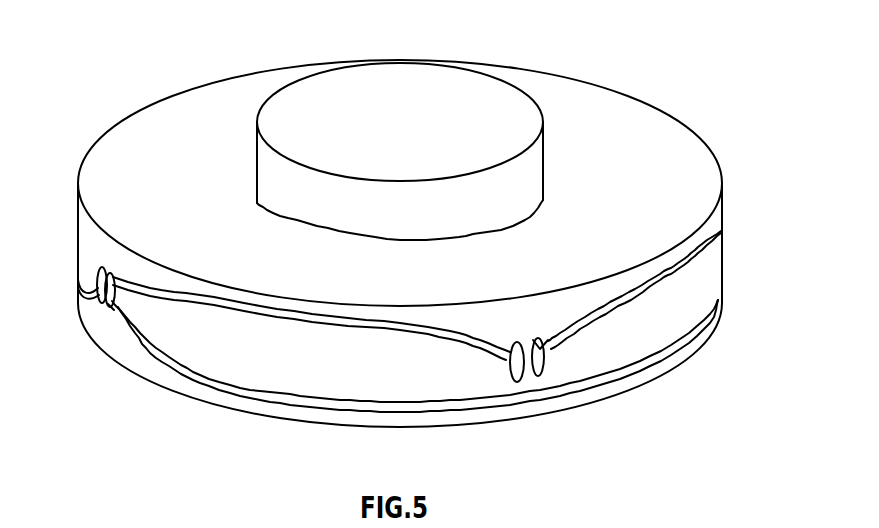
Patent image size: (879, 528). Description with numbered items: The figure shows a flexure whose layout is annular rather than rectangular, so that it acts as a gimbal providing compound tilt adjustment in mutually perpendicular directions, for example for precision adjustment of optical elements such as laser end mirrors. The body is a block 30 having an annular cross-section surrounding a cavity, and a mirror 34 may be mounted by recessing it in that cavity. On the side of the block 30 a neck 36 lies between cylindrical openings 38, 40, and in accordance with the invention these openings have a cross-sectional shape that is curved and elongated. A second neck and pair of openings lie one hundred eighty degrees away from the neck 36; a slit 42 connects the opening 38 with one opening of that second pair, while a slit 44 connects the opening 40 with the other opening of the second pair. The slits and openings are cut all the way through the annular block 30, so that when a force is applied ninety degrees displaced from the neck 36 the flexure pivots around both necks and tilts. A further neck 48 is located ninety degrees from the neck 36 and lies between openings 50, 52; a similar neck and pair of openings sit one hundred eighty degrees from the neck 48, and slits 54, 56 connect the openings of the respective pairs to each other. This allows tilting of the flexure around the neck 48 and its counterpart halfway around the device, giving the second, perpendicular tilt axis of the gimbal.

The block 30 is at (705, 275).
The mirror 34 is at (456, 95).
The neck 36 is at (536, 376).
The cylindrical opening 38 is at (546, 366).
The cylindrical opening 40 is at (514, 380).
The slit 42 is at (718, 237).
The slit 44 is at (405, 330).
The neck 48 is at (111, 309).
The opening 50 is at (116, 296).
The opening 52 is at (97, 268).
The slit 54 is at (270, 400).
The slit 56 is at (78, 298).